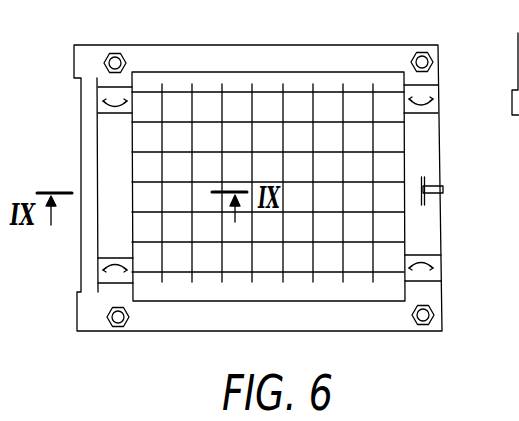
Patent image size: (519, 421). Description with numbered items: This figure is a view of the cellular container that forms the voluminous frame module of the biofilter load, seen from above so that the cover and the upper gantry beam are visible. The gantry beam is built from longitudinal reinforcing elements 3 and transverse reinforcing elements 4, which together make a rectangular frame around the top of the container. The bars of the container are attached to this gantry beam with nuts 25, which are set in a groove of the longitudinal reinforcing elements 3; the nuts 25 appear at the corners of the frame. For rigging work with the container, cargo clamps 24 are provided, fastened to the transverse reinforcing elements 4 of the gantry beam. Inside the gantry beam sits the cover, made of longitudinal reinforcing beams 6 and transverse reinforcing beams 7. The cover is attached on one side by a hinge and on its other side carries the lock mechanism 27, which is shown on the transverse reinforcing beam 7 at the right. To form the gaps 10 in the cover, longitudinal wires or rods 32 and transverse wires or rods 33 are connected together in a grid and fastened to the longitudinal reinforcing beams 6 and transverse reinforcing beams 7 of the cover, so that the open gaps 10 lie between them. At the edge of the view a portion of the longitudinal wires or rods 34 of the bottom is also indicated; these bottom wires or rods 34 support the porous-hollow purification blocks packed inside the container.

The longitudinal reinforcing elements 3 is at (140, 55).
The transverse reinforcing elements 4 is at (415, 90).
The longitudinal reinforcing beams 6 is at (182, 78).
The transverse reinforcing beams 7 is at (425, 140).
The gaps 10 is at (394, 258).
The cargo clamps 24 is at (102, 100).
The nuts 25 is at (105, 53).
The lock mechanism 27 is at (433, 177).
The longitudinal wires or rods 32 is at (299, 145).
The transverse wires or rods 33 is at (222, 257).
The longitudinal wires or rods 34 is at (516, 22).